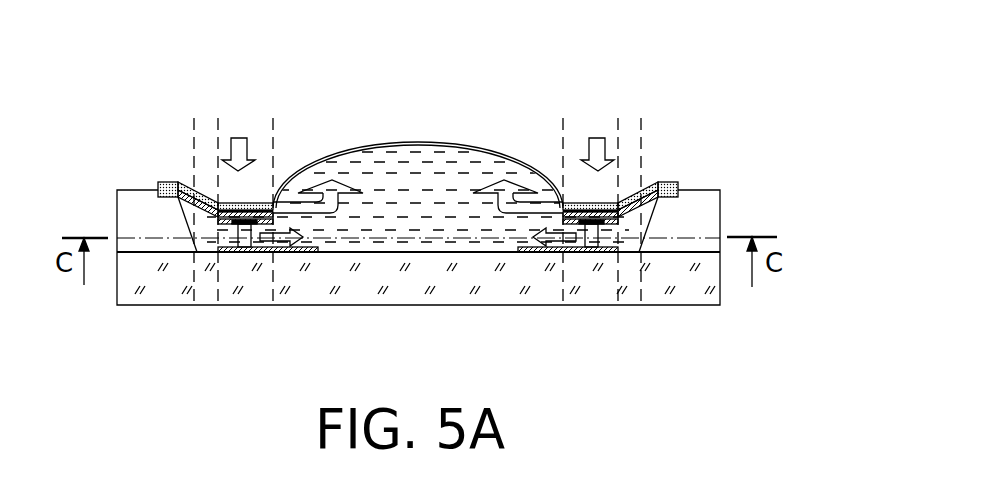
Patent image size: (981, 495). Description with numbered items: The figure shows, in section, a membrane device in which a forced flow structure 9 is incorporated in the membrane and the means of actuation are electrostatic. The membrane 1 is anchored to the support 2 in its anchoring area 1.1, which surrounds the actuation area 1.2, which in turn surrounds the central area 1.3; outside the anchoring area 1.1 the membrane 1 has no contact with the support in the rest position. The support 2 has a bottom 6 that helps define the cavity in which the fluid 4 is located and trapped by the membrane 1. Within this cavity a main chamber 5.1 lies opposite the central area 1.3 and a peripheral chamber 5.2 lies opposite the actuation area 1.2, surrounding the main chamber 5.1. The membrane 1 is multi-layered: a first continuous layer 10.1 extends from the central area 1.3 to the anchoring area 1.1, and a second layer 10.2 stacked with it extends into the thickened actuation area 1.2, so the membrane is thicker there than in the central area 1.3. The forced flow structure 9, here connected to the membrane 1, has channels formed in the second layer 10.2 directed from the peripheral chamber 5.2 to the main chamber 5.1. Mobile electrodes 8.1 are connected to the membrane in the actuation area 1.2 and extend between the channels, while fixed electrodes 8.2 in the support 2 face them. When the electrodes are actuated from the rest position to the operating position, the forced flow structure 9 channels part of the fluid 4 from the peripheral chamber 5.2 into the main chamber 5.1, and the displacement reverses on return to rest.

The membrane 1 is at (462, 67).
The anchoring area 1.1 is at (678, 182).
The actuation area 1.2 is at (585, 205).
The central area 1.3 is at (453, 147).
The support 2 is at (673, 282).
The fluid 4 is at (418, 232).
The main chamber 5.1 is at (485, 232).
The peripheral chamber 5.2 is at (637, 232).
The bottom 6 is at (373, 253).
The mobile electrode 8.1 is at (272, 203).
The fixed electrode 8.2 is at (237, 252).
The forced flow structure 9 is at (160, 184).
The first continuous layer 10.1 is at (205, 198).
The second layer 10.2 is at (157, 202).